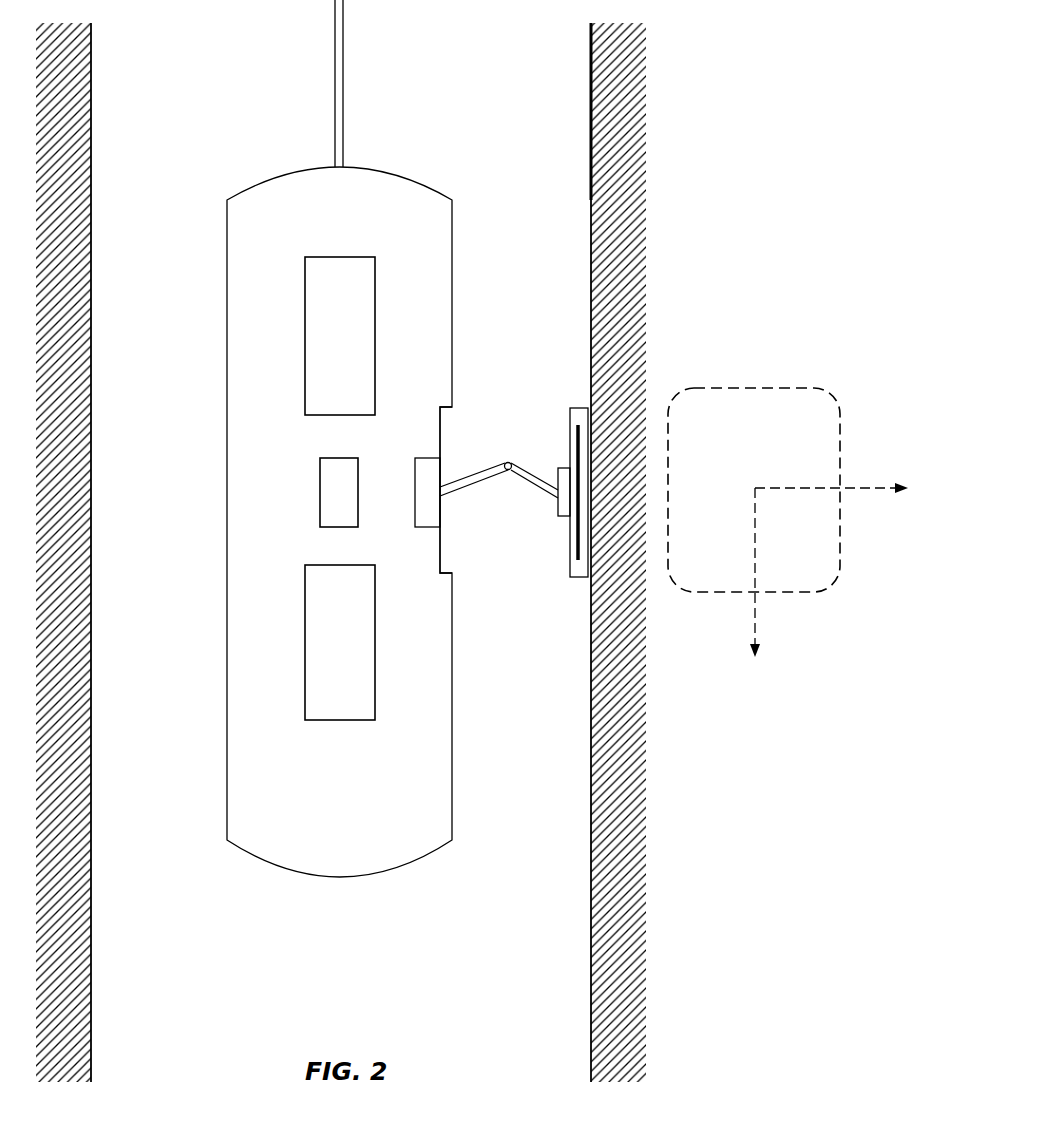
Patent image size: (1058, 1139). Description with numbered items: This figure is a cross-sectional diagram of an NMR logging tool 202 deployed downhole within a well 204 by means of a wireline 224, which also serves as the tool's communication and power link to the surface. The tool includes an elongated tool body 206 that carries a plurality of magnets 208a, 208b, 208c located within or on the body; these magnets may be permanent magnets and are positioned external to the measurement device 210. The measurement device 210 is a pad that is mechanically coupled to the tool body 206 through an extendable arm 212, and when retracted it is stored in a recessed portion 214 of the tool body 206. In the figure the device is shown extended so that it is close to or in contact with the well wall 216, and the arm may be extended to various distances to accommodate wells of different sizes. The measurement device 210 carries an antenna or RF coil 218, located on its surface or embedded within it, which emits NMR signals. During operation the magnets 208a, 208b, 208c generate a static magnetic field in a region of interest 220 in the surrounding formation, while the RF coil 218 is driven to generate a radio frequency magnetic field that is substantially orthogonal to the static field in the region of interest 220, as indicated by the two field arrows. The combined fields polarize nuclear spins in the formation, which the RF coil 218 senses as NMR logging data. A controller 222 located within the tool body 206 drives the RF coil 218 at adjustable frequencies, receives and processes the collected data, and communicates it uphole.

The downhole NMR logging tool assembly 202 is at (424, 82).
The well 204 is at (192, 88).
The tool body 206 is at (438, 252).
The magnet 208a is at (328, 340).
The magnet 208b is at (322, 587).
The magnet 208c is at (327, 492).
The measurement device 210 is at (570, 415).
The extendable arm 212 is at (468, 488).
The recessed portion 214 is at (442, 558).
The well wall 216 is at (590, 600).
The RF coil 218 is at (578, 445).
The region of interest 220 is at (826, 440).
The controller 222 is at (427, 519).
The wireline 224 is at (335, 50).